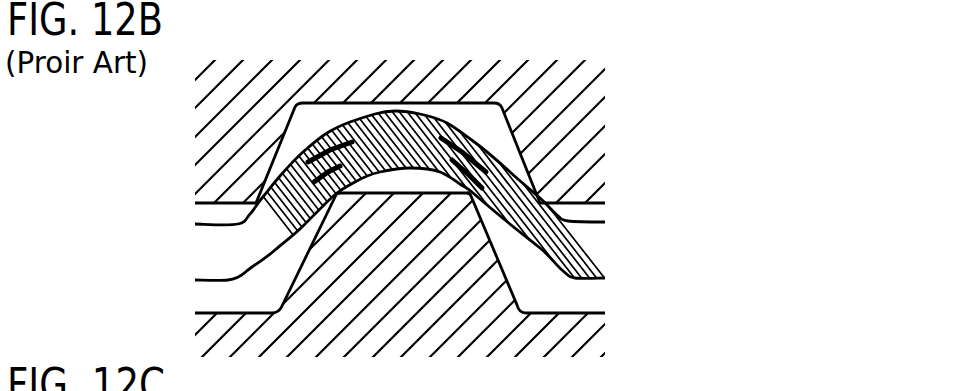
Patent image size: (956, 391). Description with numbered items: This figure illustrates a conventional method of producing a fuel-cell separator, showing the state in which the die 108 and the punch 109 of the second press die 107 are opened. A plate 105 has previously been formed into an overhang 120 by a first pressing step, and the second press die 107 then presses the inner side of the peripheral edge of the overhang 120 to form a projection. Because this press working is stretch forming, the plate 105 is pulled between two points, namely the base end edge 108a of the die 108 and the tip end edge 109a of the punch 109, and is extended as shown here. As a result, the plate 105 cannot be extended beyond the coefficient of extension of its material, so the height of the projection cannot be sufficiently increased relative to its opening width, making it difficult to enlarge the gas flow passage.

The plate 105 is at (593, 250).
The second press die 107 is at (413, 118).
The die 108 is at (583, 83).
The base end edge of the die 108a is at (265, 195).
The punch 109 is at (399, 288).
The tip end edge of the punch 109a is at (330, 193).
The overhang 120 is at (443, 112).